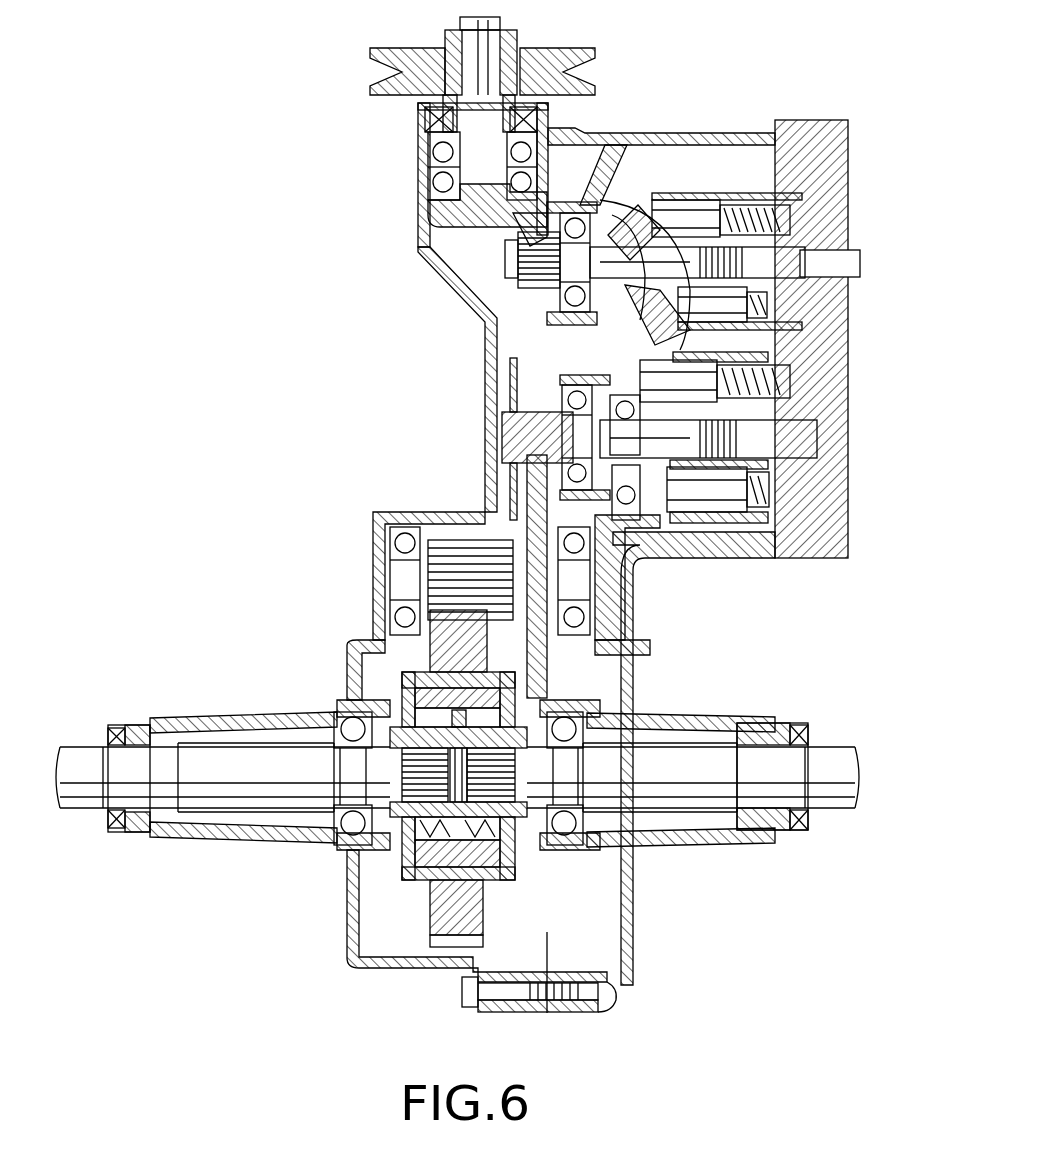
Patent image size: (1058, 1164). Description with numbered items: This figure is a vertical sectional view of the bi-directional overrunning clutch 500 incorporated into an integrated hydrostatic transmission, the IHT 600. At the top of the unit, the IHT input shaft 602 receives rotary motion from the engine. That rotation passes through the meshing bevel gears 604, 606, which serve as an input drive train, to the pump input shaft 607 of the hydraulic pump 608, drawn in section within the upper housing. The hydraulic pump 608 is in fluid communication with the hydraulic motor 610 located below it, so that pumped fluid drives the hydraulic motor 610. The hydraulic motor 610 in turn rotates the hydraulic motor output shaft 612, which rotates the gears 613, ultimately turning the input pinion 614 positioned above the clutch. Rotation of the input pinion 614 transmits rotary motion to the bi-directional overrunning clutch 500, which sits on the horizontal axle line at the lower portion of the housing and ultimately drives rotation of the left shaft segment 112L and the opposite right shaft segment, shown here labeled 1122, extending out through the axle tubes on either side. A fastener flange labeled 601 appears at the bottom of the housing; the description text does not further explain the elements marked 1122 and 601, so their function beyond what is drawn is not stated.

The IHT 600 is at (312, 404).
The IHT input shaft 602 is at (483, 122).
The bevel gear 604 is at (510, 247).
The bevel gear 606 is at (510, 247).
The pump input shaft 607 is at (663, 260).
The hydraulic pump 608 is at (699, 180).
The hydraulic motor 610 is at (726, 535).
The hydraulic motor output shaft 612 is at (520, 440).
The gears 613 is at (529, 412).
The input pinion 614 is at (437, 580).
The bi-directional overrunning clutch 500 is at (396, 910).
The left shaft segment 112L is at (80, 778).
The right axle shaft 1122 is at (837, 800).
The mounting bolt flange 601 is at (615, 982).